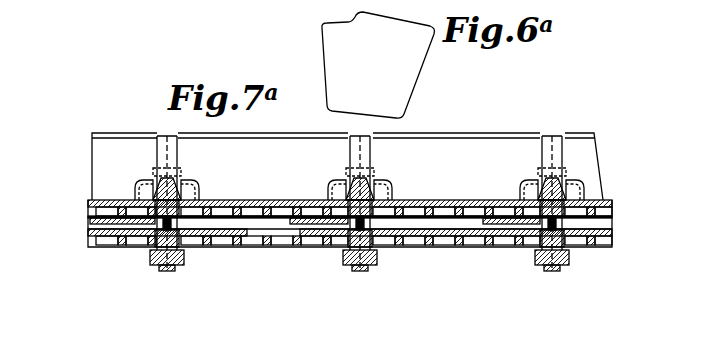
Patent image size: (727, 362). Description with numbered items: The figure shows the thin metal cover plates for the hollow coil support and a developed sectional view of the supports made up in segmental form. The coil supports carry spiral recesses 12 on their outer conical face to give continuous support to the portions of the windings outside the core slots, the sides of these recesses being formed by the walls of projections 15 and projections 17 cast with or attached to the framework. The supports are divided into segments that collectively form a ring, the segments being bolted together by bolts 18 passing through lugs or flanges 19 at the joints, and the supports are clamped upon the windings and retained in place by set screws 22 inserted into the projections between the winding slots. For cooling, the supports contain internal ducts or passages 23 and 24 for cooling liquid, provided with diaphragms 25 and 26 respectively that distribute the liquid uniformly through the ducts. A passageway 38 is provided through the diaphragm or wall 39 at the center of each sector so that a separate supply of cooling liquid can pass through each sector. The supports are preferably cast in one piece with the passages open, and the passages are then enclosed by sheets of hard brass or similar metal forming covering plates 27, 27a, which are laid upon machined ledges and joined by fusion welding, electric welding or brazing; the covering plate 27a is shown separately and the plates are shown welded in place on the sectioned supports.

In FIG. 7A, the recesses 12 is at (100, 231).
In FIG. 7A, the projections 15 is at (612, 232).
In FIG. 7A, the projections 17 is at (92, 218).
In FIG. 7A, the bolts 18 is at (151, 180).
In FIG. 7A, the lugs or flanges 19 is at (164, 163).
In FIG. 7A, the set screws 22 is at (168, 270).
In FIG. 7A, the internal ducts or passages 23 is at (222, 205).
In FIG. 7A, the internal ducts or passages 24 is at (196, 247).
In FIG. 7A, the diaphragms 25 is at (290, 202).
In FIG. 7A, the diaphragms 26 is at (318, 247).
In FIG. 7A, the covering plate 27 is at (213, 205).
In FIG. 7A, the covering plate 27a is at (118, 238).
In FIG. 6A, the covering plate 27a is at (378, 65).
In FIG. 7A, the passageway 38 is at (258, 247).
In FIG. 7A, the diaphragm or wall 39 is at (449, 247).